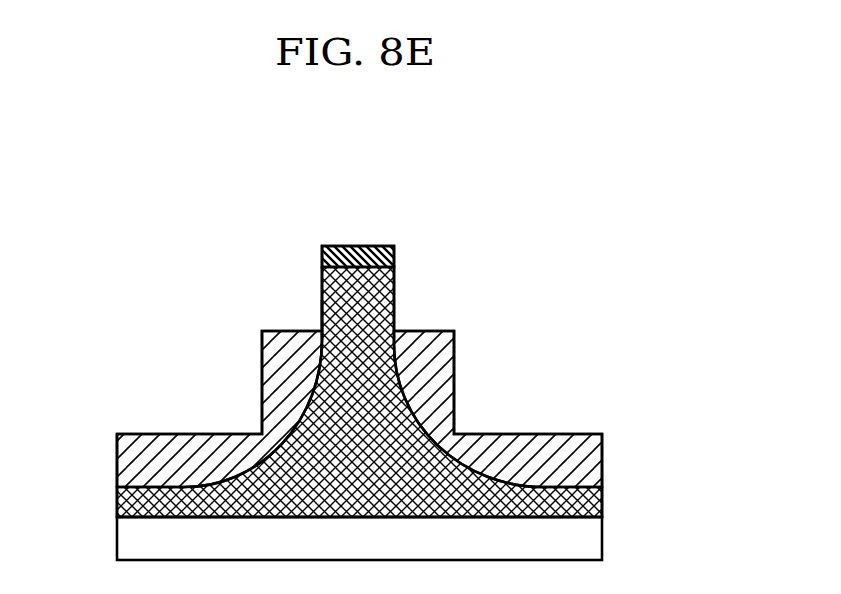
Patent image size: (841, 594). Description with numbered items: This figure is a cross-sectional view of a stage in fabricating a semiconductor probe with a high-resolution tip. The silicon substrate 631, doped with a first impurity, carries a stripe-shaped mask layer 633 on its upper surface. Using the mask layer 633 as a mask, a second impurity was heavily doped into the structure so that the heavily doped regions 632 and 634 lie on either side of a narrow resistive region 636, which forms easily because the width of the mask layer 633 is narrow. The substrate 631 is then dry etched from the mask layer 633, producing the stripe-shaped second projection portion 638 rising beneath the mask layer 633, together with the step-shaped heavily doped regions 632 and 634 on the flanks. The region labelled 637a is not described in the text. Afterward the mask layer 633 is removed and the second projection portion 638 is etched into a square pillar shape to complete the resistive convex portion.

The silicon substrate 631 is at (608, 543).
The heavily doped region 632 is at (125, 459).
The mask layer 633 is at (365, 246).
The heavily doped region 634 is at (592, 461).
The resistive region 636 is at (319, 319).
The recess region 637a is at (481, 364).
The second projection portion 638 is at (378, 303).